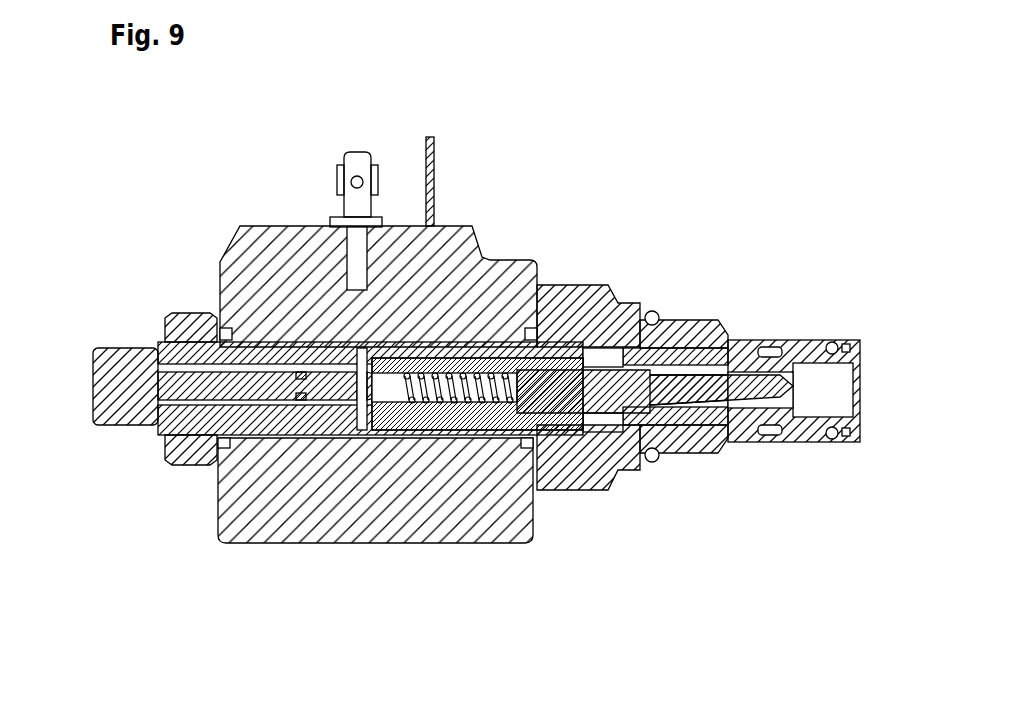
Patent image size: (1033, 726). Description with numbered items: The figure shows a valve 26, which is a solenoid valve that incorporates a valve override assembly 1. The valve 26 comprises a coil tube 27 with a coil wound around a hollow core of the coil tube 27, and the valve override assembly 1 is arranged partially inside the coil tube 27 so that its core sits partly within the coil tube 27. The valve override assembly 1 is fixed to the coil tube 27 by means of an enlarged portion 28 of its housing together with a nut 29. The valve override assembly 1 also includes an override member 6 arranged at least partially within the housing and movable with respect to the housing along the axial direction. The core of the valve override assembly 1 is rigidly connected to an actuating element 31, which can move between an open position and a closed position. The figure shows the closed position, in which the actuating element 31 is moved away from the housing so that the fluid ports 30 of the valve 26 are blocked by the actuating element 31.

The valve override assembly 1 is at (134, 443).
The override member 6 is at (103, 394).
The valve 26 is at (226, 150).
The coil tube 27 is at (305, 500).
The enlarged portion 28 is at (551, 300).
The nut 29 is at (188, 332).
The fluid ports 30 is at (763, 350).
The actuating element 31 is at (735, 392).